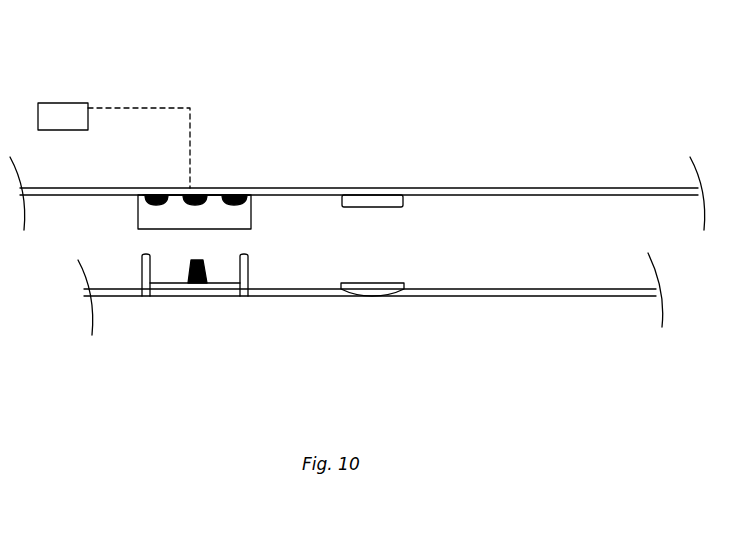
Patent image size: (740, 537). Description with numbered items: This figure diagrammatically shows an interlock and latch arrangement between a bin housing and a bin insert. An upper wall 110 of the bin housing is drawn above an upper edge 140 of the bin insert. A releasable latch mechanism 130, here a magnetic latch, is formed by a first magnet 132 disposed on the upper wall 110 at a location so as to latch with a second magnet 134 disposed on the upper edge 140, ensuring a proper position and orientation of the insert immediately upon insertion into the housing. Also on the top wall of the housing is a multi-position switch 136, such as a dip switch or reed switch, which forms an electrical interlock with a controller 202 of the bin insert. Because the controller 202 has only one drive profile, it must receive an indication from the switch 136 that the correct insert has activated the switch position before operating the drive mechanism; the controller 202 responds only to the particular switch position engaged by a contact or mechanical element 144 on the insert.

The upper wall 110 is at (473, 188).
The releasable latch mechanism 130 is at (253, 215).
The first magnet 132 is at (383, 208).
The second magnet 134 is at (372, 297).
The multi-position switch 136 is at (227, 182).
The upper edge 140 is at (470, 297).
The contact or mechanical element 144 is at (200, 284).
The controller 202 is at (67, 103).